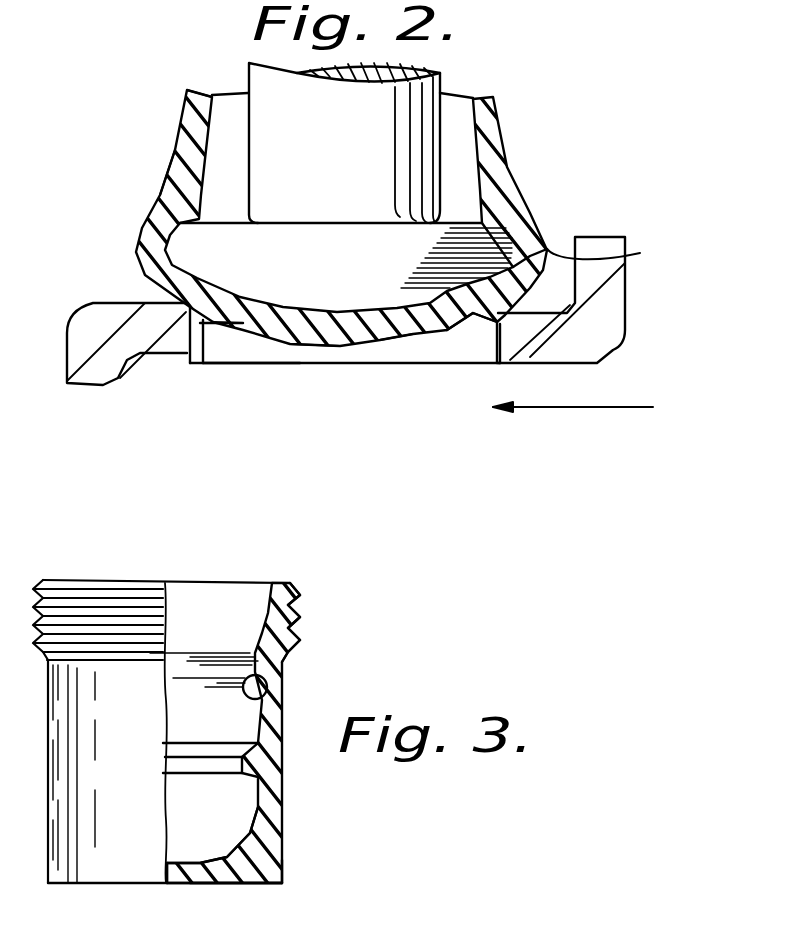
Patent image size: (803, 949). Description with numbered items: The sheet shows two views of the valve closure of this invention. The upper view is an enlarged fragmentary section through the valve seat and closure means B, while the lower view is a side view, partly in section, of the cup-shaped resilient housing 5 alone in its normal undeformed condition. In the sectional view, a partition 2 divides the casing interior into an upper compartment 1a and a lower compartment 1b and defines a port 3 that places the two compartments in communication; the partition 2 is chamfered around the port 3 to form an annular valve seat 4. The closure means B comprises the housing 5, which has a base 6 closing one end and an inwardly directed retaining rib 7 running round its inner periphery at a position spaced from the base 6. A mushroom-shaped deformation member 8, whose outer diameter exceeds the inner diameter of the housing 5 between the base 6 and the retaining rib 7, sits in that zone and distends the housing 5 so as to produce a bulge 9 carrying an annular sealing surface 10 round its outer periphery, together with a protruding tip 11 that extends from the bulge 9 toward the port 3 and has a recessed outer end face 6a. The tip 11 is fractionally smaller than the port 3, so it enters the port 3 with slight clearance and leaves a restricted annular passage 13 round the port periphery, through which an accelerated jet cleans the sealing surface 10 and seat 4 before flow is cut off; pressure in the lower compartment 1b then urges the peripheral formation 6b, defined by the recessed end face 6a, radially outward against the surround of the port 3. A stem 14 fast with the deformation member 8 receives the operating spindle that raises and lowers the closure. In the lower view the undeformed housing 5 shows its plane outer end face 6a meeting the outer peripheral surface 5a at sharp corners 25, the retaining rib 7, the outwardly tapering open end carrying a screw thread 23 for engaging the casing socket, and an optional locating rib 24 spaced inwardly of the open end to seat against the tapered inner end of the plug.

In FIG. 2, the upper compartment 1a is at (152, 122).
In FIG. 2, the lower compartment 1b is at (332, 458).
In FIG. 2, the partition 2 is at (108, 372).
In FIG. 2, the port 3 is at (285, 372).
In FIG. 2, the annular valve seat 4 is at (173, 325).
In FIG. 2, the cup-shaped resilient housing 5 is at (184, 147).
In FIG. 3, the cup-shaped resilient housing 5 is at (282, 823).
In FIG. 3, the outer peripheral surface 5a is at (280, 850).
In FIG. 2, the base 6 is at (340, 337).
In FIG. 3, the base 6 is at (190, 873).
In FIG. 2, the outer end face 6a is at (448, 332).
In FIG. 3, the outer end face 6a is at (232, 886).
In FIG. 2, the peripheral formation 6b is at (143, 285).
In FIG. 2, the retaining rib 7 is at (187, 217).
In FIG. 3, the retaining rib 7 is at (250, 768).
In FIG. 2, the mushroom-shaped deformation member 8 is at (318, 290).
In FIG. 2, the bulge 9 is at (602, 265).
In FIG. 2, the annular sealing surface 10 is at (143, 270).
In FIG. 2, the protruding tip 11 is at (277, 367).
In FIG. 2, the restricted annular passage 13 is at (188, 345).
In FIG. 2, the stem 14 is at (417, 97).
In FIG. 3, the screw thread 23 is at (295, 623).
In FIG. 3, the locating rib 24 is at (265, 700).
In FIG. 3, the sharp corners 25 is at (48, 883).
In FIG. 2, the closure means B is at (143, 207).